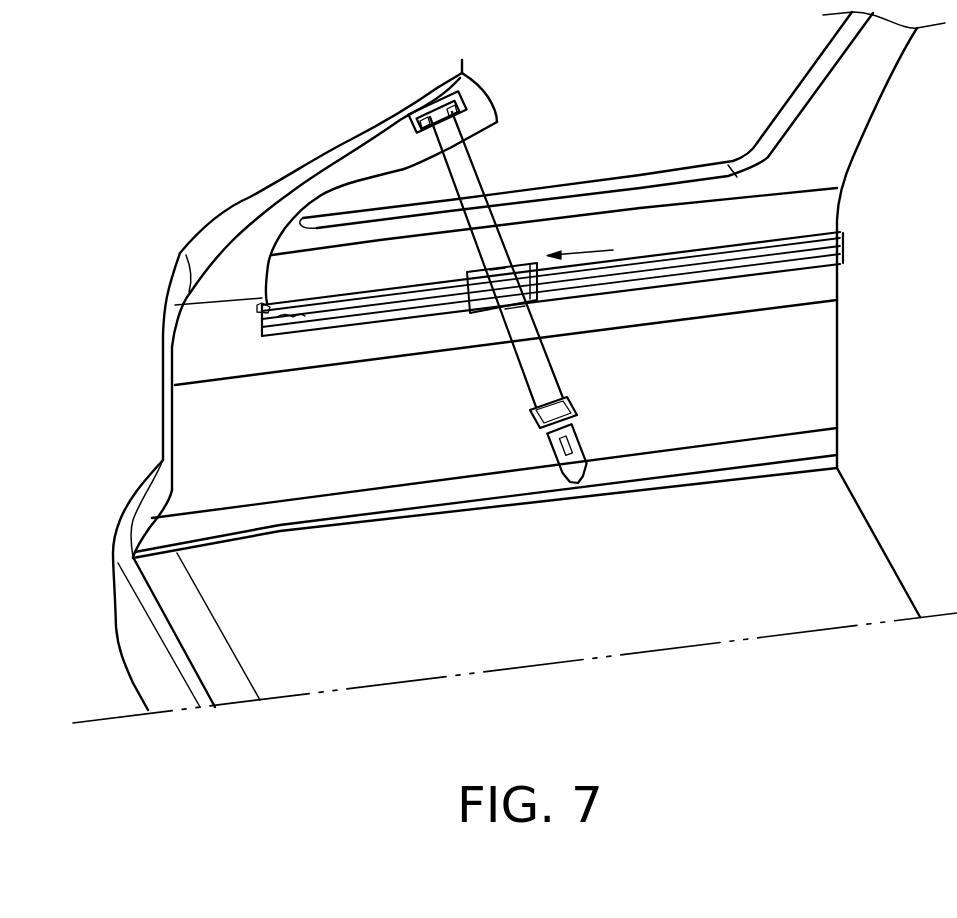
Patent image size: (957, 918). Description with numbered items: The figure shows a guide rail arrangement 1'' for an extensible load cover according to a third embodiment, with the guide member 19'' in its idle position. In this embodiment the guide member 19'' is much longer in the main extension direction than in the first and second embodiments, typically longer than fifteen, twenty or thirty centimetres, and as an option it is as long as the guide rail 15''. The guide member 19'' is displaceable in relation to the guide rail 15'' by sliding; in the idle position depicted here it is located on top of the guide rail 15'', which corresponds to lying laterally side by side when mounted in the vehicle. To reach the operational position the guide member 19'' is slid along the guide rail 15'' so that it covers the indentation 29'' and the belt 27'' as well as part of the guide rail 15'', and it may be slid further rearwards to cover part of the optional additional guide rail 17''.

The guide rail arrangement 1'' is at (515, 367).
The guide rail 15'' is at (551, 207).
The additional guide rail 17'' is at (512, 243).
The guide member 19'' is at (551, 203).
The belt 27'' is at (497, 413).
The indentation 29'' is at (532, 200).